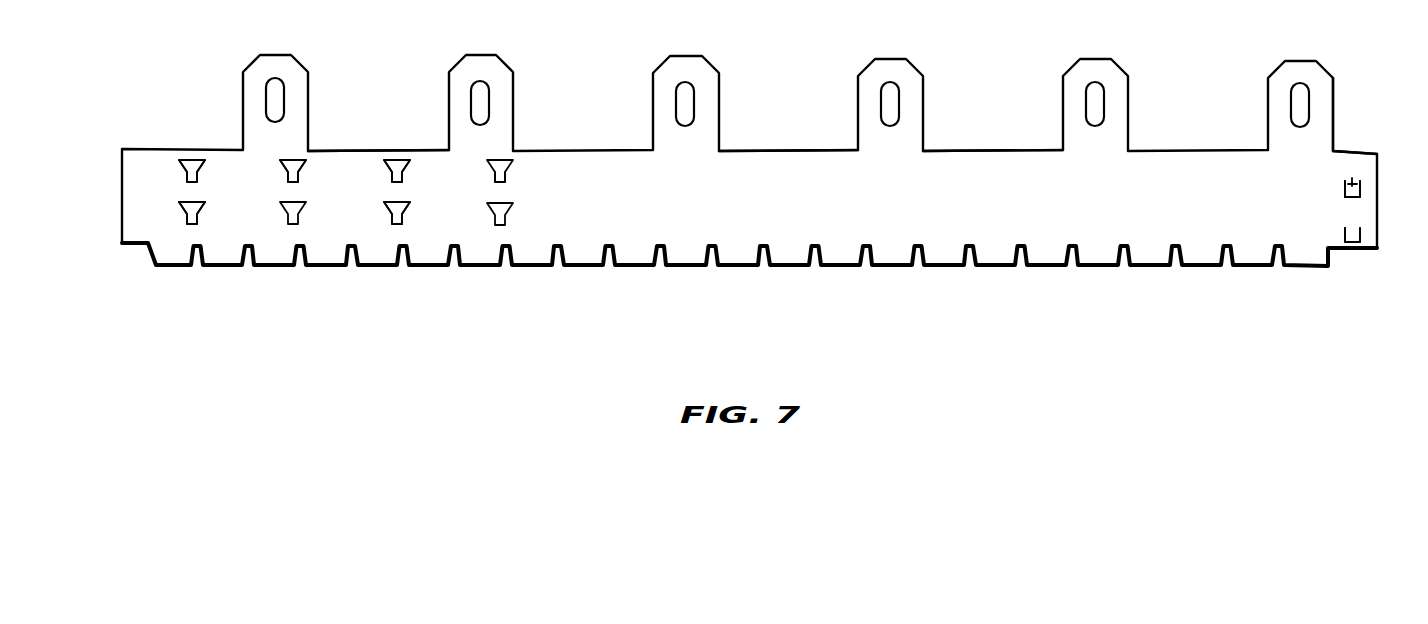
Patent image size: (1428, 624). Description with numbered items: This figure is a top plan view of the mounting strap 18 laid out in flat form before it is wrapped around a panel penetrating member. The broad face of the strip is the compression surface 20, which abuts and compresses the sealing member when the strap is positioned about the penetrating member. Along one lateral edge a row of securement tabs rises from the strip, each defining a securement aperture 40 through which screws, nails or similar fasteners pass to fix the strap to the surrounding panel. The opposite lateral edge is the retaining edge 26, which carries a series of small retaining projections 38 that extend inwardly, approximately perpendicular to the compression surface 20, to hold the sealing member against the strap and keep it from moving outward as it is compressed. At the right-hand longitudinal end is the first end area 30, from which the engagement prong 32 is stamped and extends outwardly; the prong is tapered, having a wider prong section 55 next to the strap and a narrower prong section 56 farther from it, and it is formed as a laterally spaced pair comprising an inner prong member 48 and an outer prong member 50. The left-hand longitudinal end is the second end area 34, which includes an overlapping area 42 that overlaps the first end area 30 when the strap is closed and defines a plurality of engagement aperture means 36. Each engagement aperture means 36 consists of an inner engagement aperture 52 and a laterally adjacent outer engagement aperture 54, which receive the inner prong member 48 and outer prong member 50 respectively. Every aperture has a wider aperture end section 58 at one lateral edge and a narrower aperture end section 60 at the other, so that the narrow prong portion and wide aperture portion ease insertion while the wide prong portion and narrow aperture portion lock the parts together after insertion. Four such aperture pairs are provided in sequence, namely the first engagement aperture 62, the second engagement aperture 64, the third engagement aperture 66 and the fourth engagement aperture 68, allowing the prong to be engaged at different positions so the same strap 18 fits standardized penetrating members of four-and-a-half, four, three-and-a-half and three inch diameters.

The mounting strap 18 is at (760, 210).
The compression surface 20 is at (1020, 210).
The retaining edge 26 is at (588, 150).
The first end area 30 is at (1277, 213).
The engagement prong 32 is at (1377, 178).
The second end area 34 is at (330, 210).
The engagement aperture means 36 is at (196, 224).
The retaining projections 38 is at (632, 265).
The securement apertures 40 is at (477, 96).
The overlapping area 42 is at (1345, 182).
The inner prong member 48 is at (1345, 192).
The outer prong member 50 is at (1345, 240).
The inner engagement aperture 52 is at (512, 168).
The outer engagement aperture 54 is at (507, 212).
The wider prong section 55 is at (1350, 180).
The narrower prong section 56 is at (1378, 200).
The wider aperture end section 58 is at (306, 162).
The narrower aperture end section 60 is at (213, 162).
The first engagement aperture 62 is at (183, 212).
The second engagement aperture 64 is at (215, 210).
The third engagement aperture 66 is at (405, 217).
The fourth engagement aperture 68 is at (500, 183).